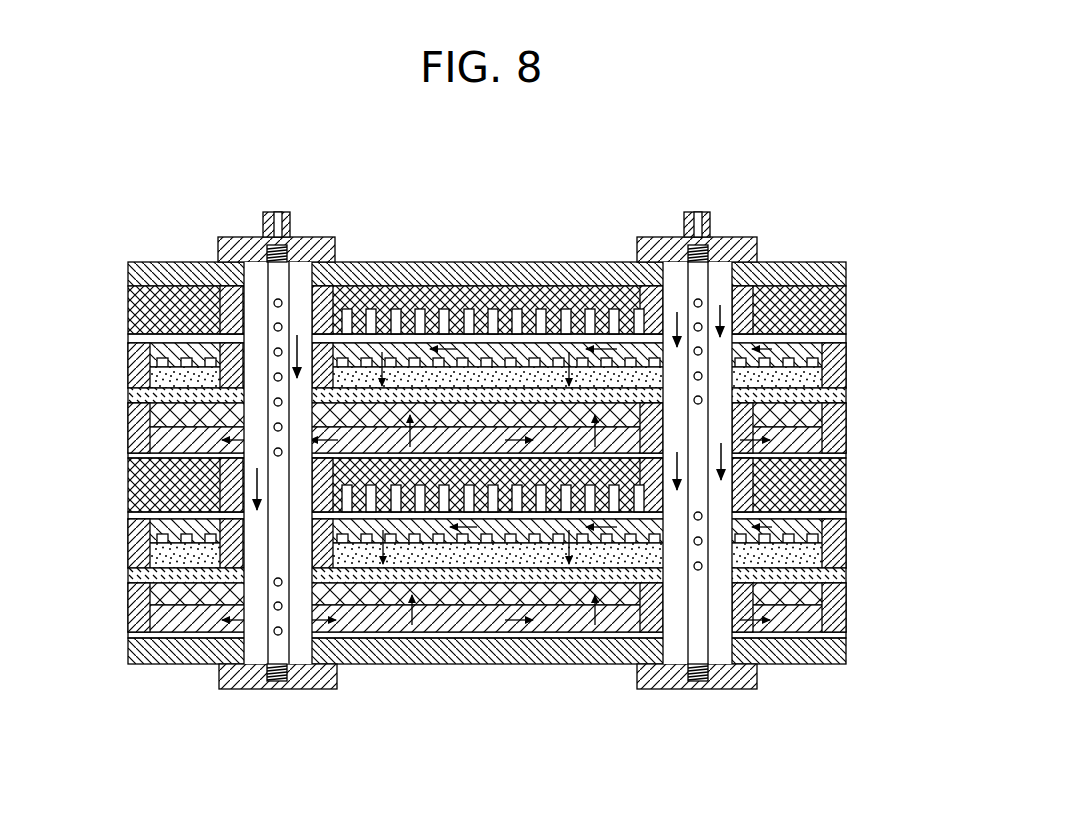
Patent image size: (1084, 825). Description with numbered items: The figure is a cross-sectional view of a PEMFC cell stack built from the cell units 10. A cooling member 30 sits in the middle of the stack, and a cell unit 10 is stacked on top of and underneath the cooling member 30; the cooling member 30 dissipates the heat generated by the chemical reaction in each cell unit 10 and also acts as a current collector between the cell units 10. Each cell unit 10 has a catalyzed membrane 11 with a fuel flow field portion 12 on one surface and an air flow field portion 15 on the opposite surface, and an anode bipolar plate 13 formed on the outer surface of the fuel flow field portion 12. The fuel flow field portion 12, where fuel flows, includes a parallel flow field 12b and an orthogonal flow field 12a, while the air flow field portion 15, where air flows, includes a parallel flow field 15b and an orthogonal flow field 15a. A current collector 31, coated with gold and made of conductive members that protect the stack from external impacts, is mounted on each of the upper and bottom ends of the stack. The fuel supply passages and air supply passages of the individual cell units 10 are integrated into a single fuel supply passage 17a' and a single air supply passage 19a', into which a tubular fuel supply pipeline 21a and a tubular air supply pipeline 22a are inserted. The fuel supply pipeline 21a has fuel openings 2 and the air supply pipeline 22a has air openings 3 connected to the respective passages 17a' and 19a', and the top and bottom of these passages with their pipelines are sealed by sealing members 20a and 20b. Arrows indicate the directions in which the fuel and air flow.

The fuel opening 2 is at (292, 305).
The air opening 3 is at (690, 301).
The cell unit 10 is at (517, 493).
The catalyzed membrane 11 is at (846, 406).
The fuel flow field portion 12 is at (540, 525).
The orthogonal flow field 12a is at (830, 598).
The parallel flow field 12b is at (830, 625).
The anode bipolar plate 13 is at (840, 339).
The air flow field portion 15 is at (544, 457).
The orthogonal flow field 15a is at (812, 378).
The parallel flow field 15b is at (833, 355).
The fuel supply passage 17a' is at (349, 436).
The air supply passage 19a' is at (765, 436).
The sealing member 20a is at (228, 238).
The sealing member 20b is at (245, 690).
The fuel supply pipeline 21a is at (267, 303).
The air supply pipeline 22a is at (680, 317).
The cooling member 30 is at (835, 310).
The current collector 31 is at (833, 270).